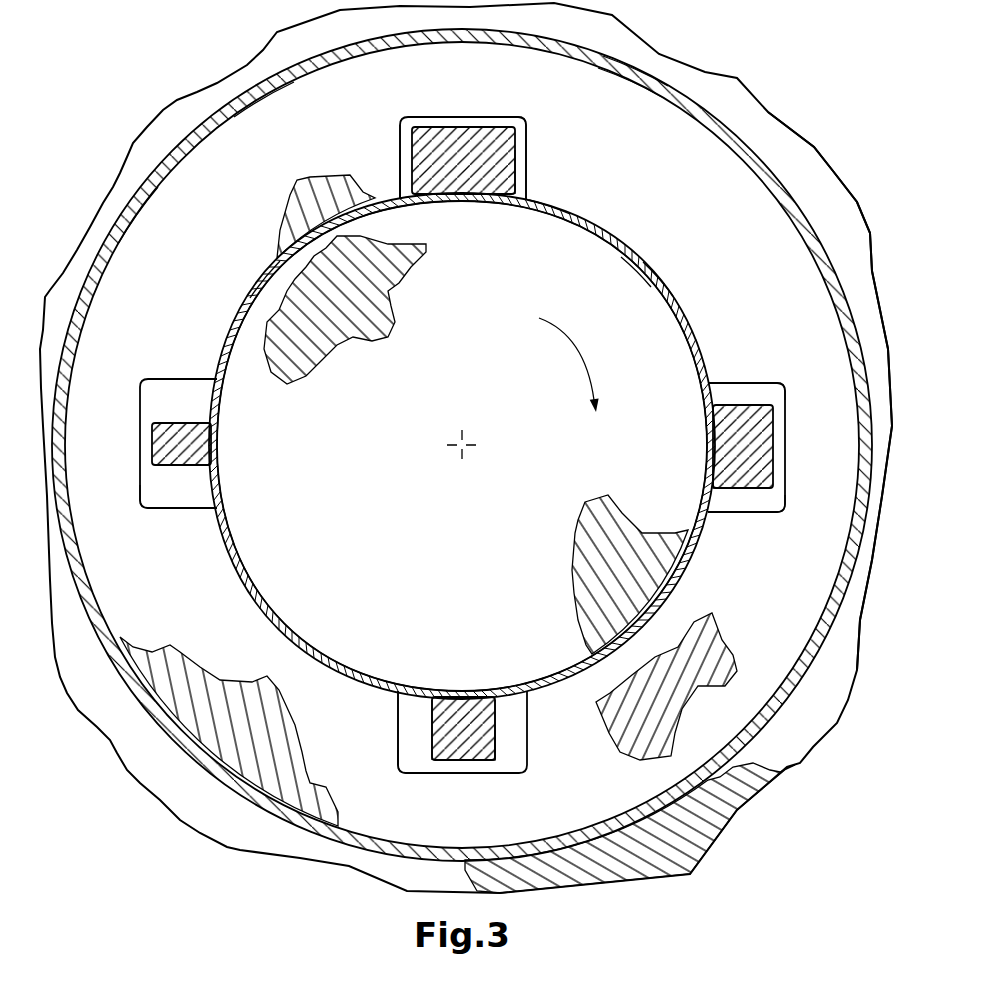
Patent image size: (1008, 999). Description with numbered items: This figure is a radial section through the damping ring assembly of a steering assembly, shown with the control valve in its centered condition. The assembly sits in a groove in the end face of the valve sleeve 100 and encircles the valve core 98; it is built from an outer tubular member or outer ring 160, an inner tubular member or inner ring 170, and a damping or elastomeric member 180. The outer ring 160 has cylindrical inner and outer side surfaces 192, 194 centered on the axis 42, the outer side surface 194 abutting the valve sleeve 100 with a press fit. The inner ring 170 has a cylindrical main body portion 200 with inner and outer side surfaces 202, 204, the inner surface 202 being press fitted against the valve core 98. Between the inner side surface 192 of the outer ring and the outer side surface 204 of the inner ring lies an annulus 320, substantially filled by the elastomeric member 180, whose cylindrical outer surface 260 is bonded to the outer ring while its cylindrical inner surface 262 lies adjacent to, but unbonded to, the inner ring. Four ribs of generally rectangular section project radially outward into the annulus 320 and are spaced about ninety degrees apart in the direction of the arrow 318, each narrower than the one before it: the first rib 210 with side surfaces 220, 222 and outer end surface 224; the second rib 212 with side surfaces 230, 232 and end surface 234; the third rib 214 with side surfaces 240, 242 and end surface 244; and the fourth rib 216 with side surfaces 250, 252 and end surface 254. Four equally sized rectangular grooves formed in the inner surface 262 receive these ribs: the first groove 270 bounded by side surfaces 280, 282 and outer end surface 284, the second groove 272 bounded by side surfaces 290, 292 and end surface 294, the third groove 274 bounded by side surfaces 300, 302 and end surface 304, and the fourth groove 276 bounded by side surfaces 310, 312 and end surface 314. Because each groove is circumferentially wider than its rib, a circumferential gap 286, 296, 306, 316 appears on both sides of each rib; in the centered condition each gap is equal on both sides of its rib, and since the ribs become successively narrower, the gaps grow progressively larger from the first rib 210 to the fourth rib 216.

The axis 42 is at (464, 447).
The valve core 98 is at (408, 538).
The valve sleeve 100 is at (67, 695).
The outer ring 160 is at (177, 143).
The inner ring 170 is at (264, 275).
The elastomeric member 180 is at (153, 247).
The inner side surface of outer ring 192 is at (638, 87).
The outer side surface of outer ring 194 is at (652, 52).
The main body portion 200 is at (624, 228).
The inner side surface of inner ring 202 is at (638, 273).
The outer side surface of inner ring 204 is at (674, 290).
The first rib 210 is at (456, 156).
The second rib 212 is at (739, 439).
The third rib 214 is at (457, 734).
The fourth rib 216 is at (183, 454).
The first side surface of first rib 220 is at (400, 131).
The second side surface of first rib 222 is at (520, 148).
The outer end surface of first rib 224 is at (478, 128).
The first side surface of second rib 230 is at (745, 383).
The second side surface of second rib 232 is at (748, 496).
The outer end surface of second rib 234 is at (775, 452).
The first side surface of third rib 240 is at (496, 730).
The second side surface of third rib 242 is at (398, 745).
The outer end surface of third rib 244 is at (452, 773).
The first side surface of fourth rib 250 is at (178, 468).
The second side surface of fourth rib 252 is at (165, 422).
The outer end surface of fourth rib 254 is at (151, 442).
The outer surface of elastomeric member 260 is at (778, 172).
The inner surface of elastomeric member 262 is at (569, 213).
The first groove 270 is at (504, 116).
The second groove 272 is at (787, 495).
The third groove 274 is at (528, 767).
The fourth groove 276 is at (139, 378).
The side surface of first groove 280 is at (398, 157).
The side surface of first groove 282 is at (516, 175).
The outer end surface of first groove 284 is at (445, 128).
The circumferential gap 286 is at (522, 128).
The side surface of second groove 290 is at (712, 388).
The side surface of second groove 292 is at (722, 490).
The outer end surface of second groove 294 is at (777, 492).
The circumferential gap 296 is at (765, 398).
The side surface of third groove 300 is at (497, 705).
The side surface of third groove 302 is at (420, 697).
The outer end surface of third groove 304 is at (406, 762).
The circumferential gap 306 is at (433, 722).
The side surface of fourth groove 310 is at (199, 497).
The side surface of fourth groove 312 is at (188, 381).
The outer end surface of fourth groove 314 is at (157, 486).
The gap 316 is at (217, 464).
The arrow 318 is at (578, 363).
The annulus 320 is at (247, 147).